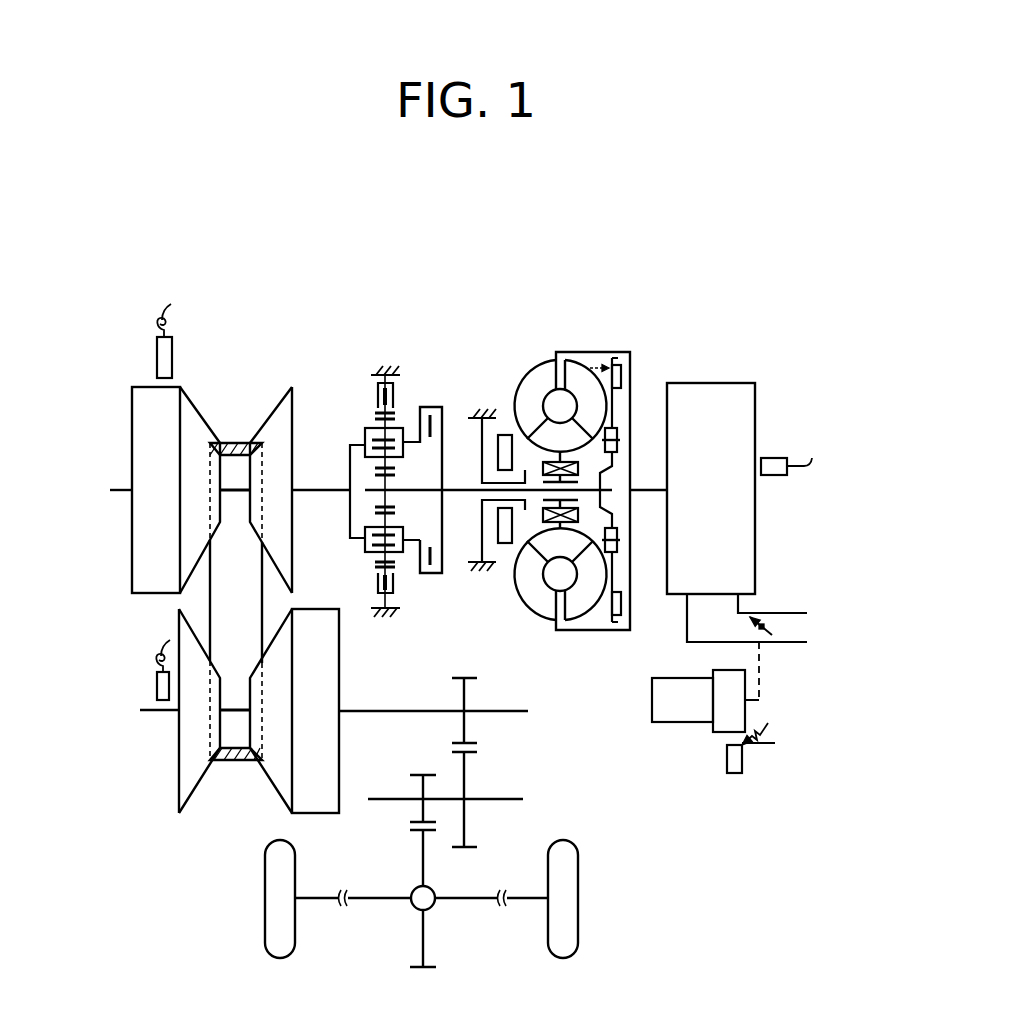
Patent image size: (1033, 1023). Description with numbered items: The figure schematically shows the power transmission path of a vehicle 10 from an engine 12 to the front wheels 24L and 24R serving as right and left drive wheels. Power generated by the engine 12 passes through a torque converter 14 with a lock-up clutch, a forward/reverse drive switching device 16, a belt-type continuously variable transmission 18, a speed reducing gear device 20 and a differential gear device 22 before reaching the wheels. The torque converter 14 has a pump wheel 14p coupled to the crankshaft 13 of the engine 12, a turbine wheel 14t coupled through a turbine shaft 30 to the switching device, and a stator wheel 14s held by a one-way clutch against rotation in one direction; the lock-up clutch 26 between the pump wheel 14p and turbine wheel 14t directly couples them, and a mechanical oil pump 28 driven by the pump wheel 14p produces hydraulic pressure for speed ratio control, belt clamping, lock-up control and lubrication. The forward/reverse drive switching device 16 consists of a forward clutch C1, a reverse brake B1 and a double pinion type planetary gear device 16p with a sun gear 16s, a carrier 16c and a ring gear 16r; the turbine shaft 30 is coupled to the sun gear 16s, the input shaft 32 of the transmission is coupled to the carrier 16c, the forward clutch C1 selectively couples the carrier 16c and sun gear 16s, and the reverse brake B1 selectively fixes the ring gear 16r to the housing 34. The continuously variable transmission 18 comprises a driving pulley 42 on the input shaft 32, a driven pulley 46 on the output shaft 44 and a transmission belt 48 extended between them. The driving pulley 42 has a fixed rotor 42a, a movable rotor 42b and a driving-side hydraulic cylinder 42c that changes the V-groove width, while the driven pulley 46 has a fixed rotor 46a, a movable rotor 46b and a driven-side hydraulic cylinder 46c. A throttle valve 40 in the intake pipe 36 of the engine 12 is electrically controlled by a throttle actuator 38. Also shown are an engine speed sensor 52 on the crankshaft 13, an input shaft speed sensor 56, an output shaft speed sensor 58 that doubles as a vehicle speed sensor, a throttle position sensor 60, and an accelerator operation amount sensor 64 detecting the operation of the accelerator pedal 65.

The vehicle 10 is at (718, 323).
The engine 12 is at (746, 445).
The crankshaft 13 is at (643, 486).
The torque converter 14 is at (564, 334).
The pump wheel 14p is at (545, 608).
The turbine wheel 14t is at (600, 603).
The stator wheel 14s is at (525, 444).
The forward/reverse drive switching device 16 is at (323, 370).
The planetary gear device 16p is at (407, 400).
The carrier 16c is at (365, 440).
The sun gear 16s is at (372, 502).
The ring gear 16r is at (378, 578).
The continuously variable transmission 18 is at (224, 823).
The speed reducing gear device 20 is at (533, 766).
The differential gear device 22 is at (410, 905).
The front wheel 24L is at (270, 922).
The front wheel 24R is at (572, 912).
The lock-up clutch 26 is at (623, 372).
The mechanical oil pump 28 is at (499, 436).
The turbine shaft 30 is at (450, 497).
The input shaft 32 is at (312, 487).
The housing 34 is at (386, 372).
The intake pipe 36 is at (803, 642).
The throttle actuator 38 is at (727, 670).
The throttle valve 40 is at (762, 612).
The driving pulley 42 is at (142, 407).
The fixed rotor 42a is at (282, 427).
The movable rotor 42b is at (187, 553).
The driving-side hydraulic cylinder 42c is at (150, 472).
The output shaft 44 is at (400, 712).
The driven pulley 46 is at (332, 692).
The fixed rotor 46a is at (180, 772).
The movable rotor 46b is at (282, 782).
The driven-side hydraulic cylinder 46c is at (313, 810).
The transmission belt 48 is at (230, 440).
The engine speed sensor 52 is at (775, 477).
The input shaft speed sensor 56 is at (171, 357).
The output shaft speed sensor 58 is at (160, 688).
The throttle position sensor 60 is at (663, 705).
The accelerator operation amount sensor 64 is at (733, 770).
The accelerator pedal 65 is at (768, 723).
The reverse brake B1 is at (377, 386).
The forward clutch C1 is at (422, 577).